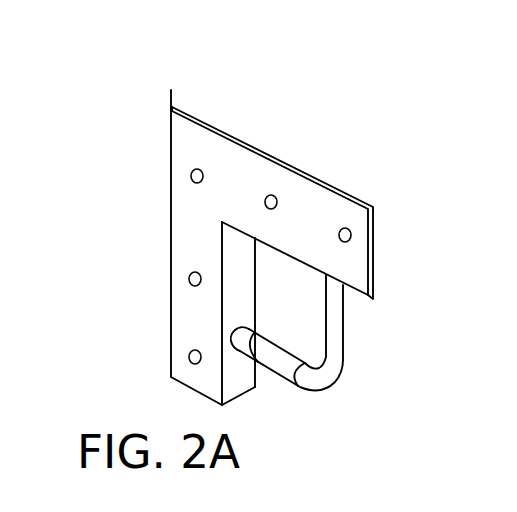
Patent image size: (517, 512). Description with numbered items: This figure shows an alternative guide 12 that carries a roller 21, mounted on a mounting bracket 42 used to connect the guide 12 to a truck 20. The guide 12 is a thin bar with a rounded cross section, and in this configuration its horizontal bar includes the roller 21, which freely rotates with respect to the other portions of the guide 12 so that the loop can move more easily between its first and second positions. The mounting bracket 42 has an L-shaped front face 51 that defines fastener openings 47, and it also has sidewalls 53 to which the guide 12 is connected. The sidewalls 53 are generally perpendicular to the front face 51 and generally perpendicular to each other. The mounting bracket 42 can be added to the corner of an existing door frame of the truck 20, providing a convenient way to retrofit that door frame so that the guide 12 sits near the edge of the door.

The truck 20 is at (516, 412).
The guide 12 is at (338, 344).
The roller 21 is at (274, 360).
The mounting bracket 42 is at (377, 248).
The fastener openings 47 is at (272, 196).
The L-shaped front face 51 is at (200, 207).
The sidewalls 53 is at (238, 282).